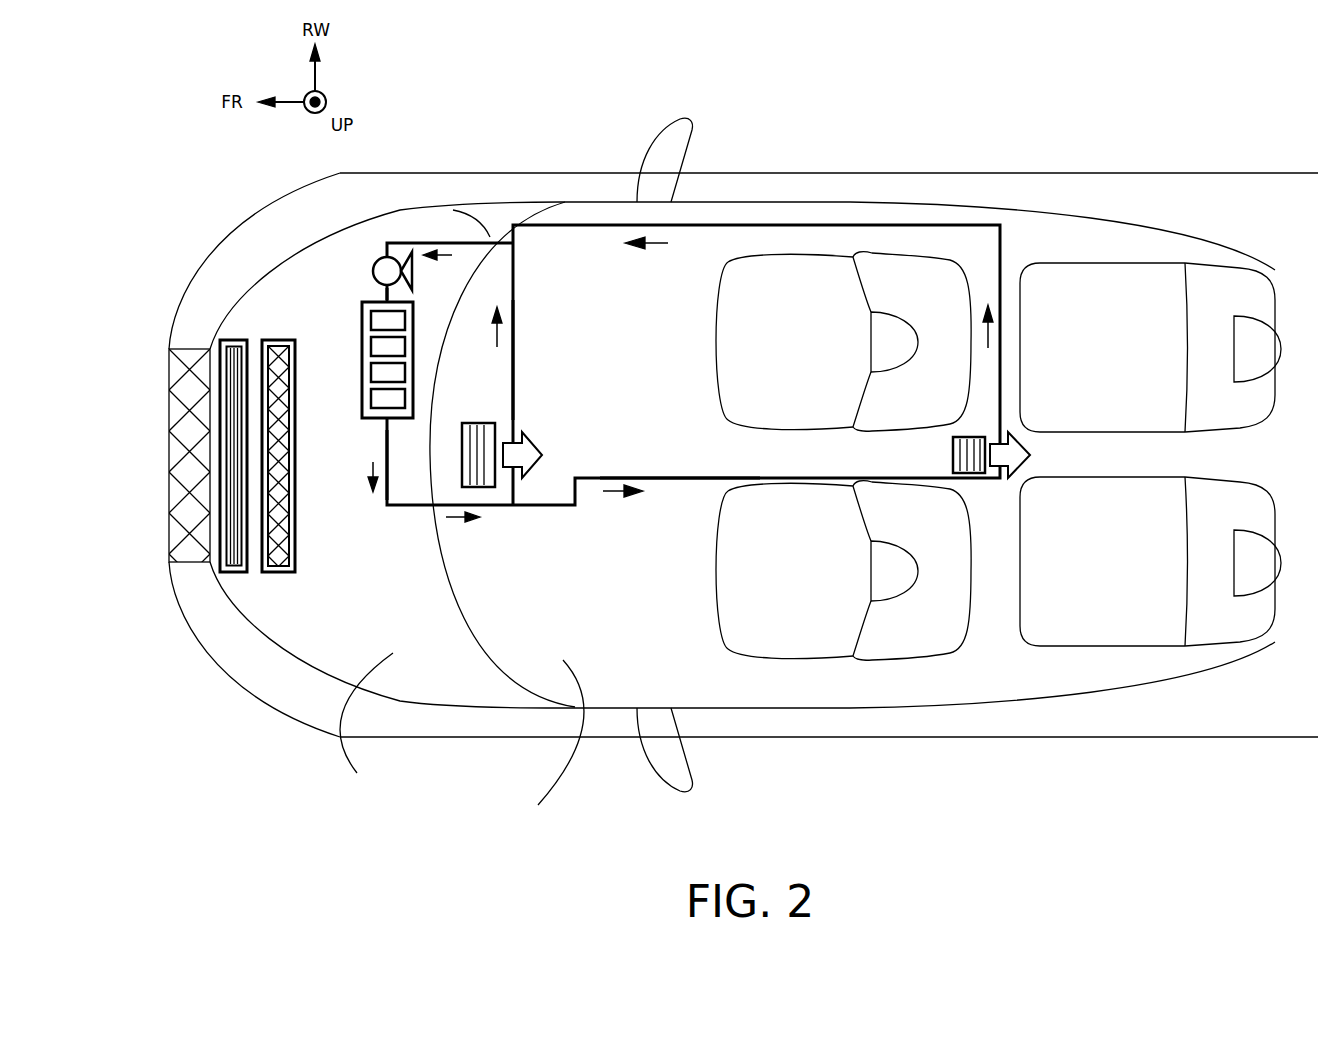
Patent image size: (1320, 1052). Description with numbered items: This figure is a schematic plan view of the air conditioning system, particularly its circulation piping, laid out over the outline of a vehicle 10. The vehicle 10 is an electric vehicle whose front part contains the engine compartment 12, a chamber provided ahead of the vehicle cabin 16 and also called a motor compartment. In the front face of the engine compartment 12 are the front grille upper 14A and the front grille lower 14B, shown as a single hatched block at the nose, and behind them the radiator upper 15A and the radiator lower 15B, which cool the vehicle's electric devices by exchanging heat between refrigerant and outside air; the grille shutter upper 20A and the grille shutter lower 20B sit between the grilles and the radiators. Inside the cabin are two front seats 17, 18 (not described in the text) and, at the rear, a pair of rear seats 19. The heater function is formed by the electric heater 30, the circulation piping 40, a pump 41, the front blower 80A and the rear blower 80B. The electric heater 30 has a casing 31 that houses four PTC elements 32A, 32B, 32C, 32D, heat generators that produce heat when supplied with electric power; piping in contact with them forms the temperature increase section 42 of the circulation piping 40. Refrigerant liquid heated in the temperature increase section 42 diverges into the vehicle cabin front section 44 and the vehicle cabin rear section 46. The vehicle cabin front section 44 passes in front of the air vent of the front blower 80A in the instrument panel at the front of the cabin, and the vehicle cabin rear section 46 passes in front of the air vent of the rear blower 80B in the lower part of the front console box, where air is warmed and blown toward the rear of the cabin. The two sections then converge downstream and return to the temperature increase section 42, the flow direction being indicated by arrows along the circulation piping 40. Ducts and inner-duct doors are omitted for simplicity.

The vehicle 10 is at (780, 740).
The engine compartment 12 is at (366, 726).
The front grille upper 14A is at (171, 405).
The front grille lower 14B is at (190, 349).
The radiator upper 15A is at (334, 462).
The radiator lower 15B is at (298, 530).
The vehicle cabin 16 is at (555, 745).
The driver seat 17 is at (713, 340).
The passenger seat 18 is at (712, 570).
The rear seat 19 is at (1100, 263).
The grille shutter upper 20A is at (305, 481).
The grille shutter lower 20B is at (240, 572).
The electric heater 30 is at (346, 367).
The casing 31 is at (380, 426).
The PTC element 32A is at (371, 316).
The PTC element 32B is at (371, 343).
The PTC element 32C is at (371, 370).
The PTC element 32D is at (371, 396).
The circulation piping 40 is at (428, 241).
The pump 41 is at (376, 262).
The temperature increase section 42 is at (412, 306).
The vehicle cabin front section 44 is at (516, 374).
The vehicle cabin rear section 46 is at (678, 481).
The front blower 80A is at (490, 422).
The rear blower 80B is at (951, 466).